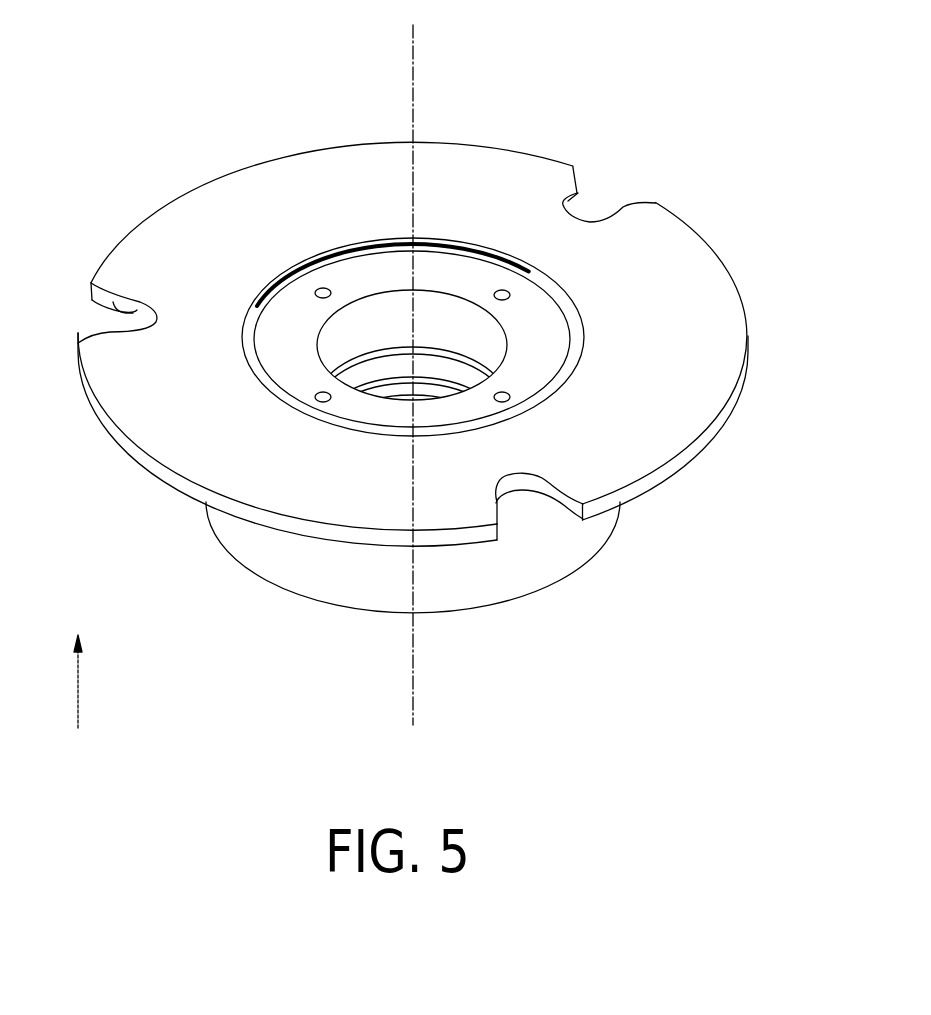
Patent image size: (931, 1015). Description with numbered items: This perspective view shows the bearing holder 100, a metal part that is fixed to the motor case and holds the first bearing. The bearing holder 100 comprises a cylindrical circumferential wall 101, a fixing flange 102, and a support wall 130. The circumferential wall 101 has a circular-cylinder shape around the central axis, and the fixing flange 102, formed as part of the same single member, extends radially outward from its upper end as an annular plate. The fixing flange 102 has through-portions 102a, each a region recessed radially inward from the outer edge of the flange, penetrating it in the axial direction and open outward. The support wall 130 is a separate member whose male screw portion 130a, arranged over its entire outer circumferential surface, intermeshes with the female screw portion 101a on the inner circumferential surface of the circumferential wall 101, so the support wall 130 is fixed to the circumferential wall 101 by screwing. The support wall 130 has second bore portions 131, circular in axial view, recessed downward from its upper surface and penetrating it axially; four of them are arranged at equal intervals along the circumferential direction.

The bearing holder 100 is at (522, 153).
The circumferential wall 101 is at (487, 583).
The female screw portion 101a is at (285, 296).
The fixing flange 102 is at (698, 275).
The through-portion 102a is at (117, 311).
The support wall 130 is at (368, 277).
The male screw portion 130a is at (449, 245).
The second bore portion 131 is at (323, 288).